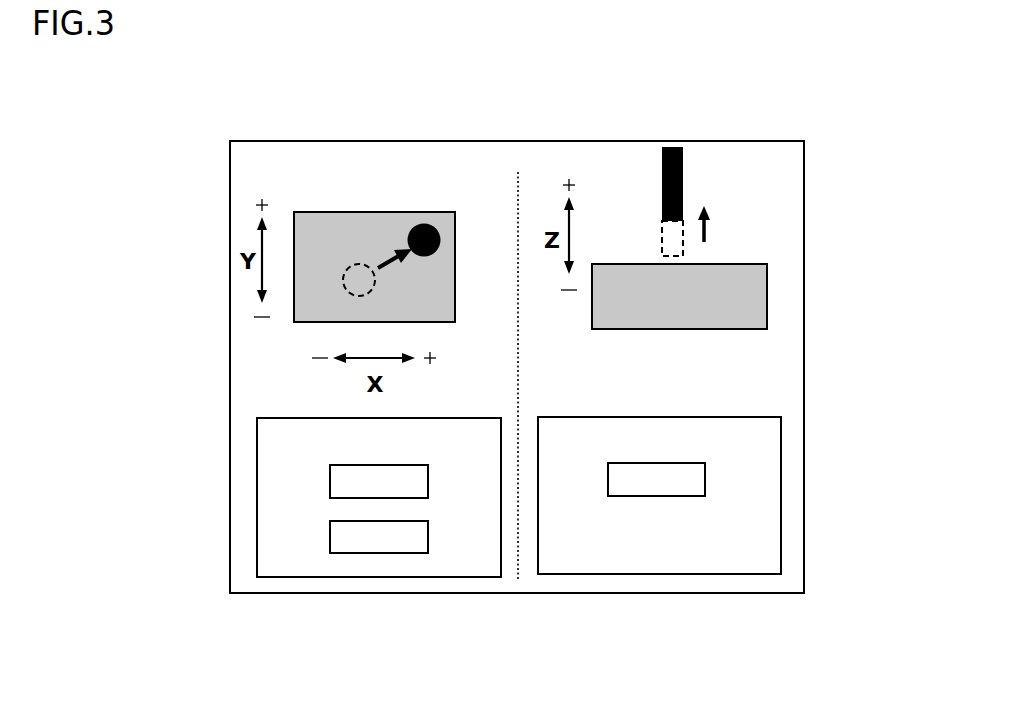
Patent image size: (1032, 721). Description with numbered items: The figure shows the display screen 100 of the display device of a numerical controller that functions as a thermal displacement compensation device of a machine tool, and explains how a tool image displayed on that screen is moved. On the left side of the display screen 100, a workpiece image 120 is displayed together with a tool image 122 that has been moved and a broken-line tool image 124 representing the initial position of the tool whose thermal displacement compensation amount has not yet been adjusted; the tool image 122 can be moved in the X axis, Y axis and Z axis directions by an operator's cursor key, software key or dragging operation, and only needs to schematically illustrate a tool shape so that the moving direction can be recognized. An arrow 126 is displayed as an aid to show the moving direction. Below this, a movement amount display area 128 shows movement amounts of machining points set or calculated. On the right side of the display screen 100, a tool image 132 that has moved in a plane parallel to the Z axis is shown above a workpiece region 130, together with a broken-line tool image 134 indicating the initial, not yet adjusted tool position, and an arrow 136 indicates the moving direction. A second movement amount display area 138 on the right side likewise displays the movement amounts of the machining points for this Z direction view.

The display screen 100 is at (768, 163).
The workpiece image 120 is at (309, 222).
The tool image 122 is at (432, 222).
The tool image 124 is at (344, 265).
The arrow 126 is at (377, 268).
The movement amount display area 128 is at (273, 490).
The Z direction image display area (workpiece) 130 is at (748, 303).
The tool image 132 is at (660, 152).
The tool image 134 is at (663, 237).
The arrow 136 is at (707, 218).
The movement amount display area 138 is at (768, 438).